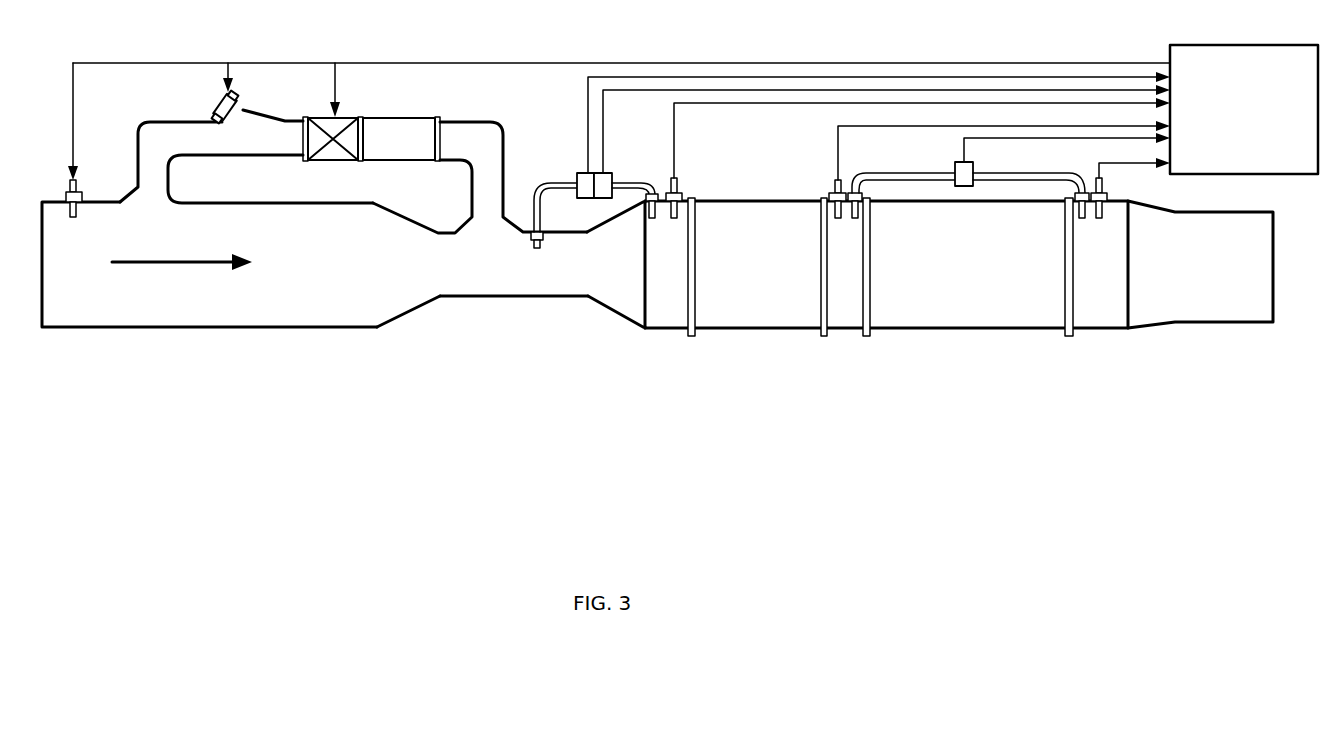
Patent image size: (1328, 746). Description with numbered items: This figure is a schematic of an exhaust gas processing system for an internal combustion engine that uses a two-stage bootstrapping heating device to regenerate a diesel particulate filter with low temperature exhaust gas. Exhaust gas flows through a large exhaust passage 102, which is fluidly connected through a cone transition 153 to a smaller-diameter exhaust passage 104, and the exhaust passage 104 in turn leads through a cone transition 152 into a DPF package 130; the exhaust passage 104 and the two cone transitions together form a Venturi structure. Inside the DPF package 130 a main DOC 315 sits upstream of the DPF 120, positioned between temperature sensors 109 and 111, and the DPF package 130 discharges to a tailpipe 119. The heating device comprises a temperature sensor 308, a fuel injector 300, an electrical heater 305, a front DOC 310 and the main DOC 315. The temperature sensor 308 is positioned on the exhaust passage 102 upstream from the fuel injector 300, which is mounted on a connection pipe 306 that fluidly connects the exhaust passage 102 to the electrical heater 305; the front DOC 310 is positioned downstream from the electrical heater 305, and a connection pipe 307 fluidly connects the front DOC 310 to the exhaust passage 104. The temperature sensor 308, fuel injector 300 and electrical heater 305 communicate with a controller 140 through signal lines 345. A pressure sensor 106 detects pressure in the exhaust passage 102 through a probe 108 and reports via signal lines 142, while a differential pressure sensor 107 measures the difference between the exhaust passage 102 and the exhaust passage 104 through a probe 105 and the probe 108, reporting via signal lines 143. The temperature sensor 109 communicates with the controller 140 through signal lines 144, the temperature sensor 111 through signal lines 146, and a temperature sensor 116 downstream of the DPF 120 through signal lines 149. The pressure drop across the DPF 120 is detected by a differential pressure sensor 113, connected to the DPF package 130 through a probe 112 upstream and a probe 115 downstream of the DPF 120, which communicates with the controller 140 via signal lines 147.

The exhaust passage 102 is at (333, 325).
The exhaust passage 104 is at (507, 296).
The probe 105 is at (549, 184).
The pressure sensor 106 is at (580, 173).
The differential pressure sensor 107 is at (600, 198).
The probe 108 is at (650, 194).
The temperature sensor 109 is at (678, 180).
The temperature sensor 111 is at (828, 190).
The probe 112 is at (874, 174).
The differential pressure sensor 113 is at (950, 180).
The probe 115 is at (1035, 176).
The temperature sensor 116 is at (1106, 187).
The tailpipe 119 is at (1273, 266).
The DPF 120 is at (1073, 265).
The DPF package 130 is at (847, 332).
The controller 140 is at (1237, 174).
The signal lines 142 is at (588, 94).
The signal lines 143 is at (603, 122).
The signal lines 144 is at (676, 134).
The signal lines 146 is at (840, 150).
The signal lines 147 is at (964, 150).
The signal lines 149 is at (1112, 163).
The cone transition 152 is at (610, 310).
The cone transition 153 is at (405, 312).
The fuel injector 300 is at (212, 108).
The electrical heater 305 is at (322, 162).
The connection pipe 306 is at (176, 168).
The connection pipe 307 is at (470, 176).
The temperature sensor 308 is at (80, 182).
The front DOC 310 is at (410, 118).
The main DOC 315 is at (690, 266).
The signal lines 345 is at (476, 64).